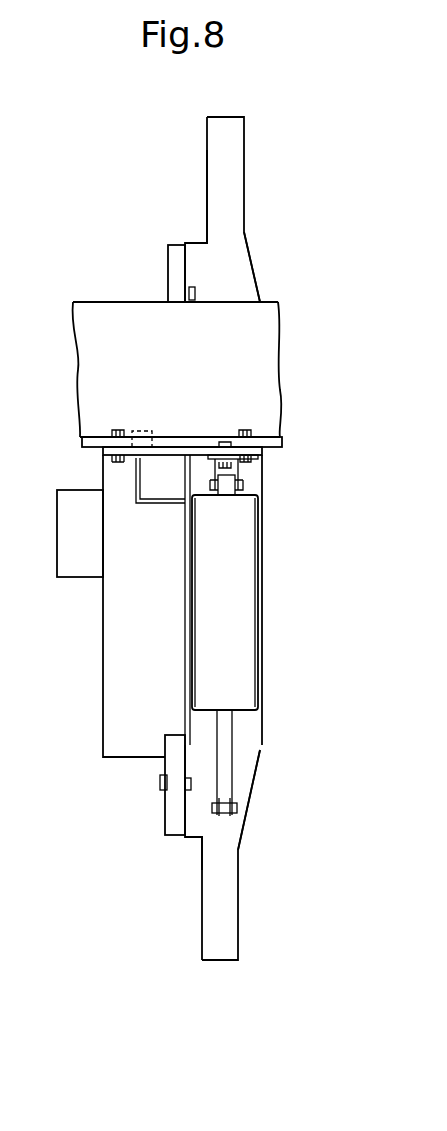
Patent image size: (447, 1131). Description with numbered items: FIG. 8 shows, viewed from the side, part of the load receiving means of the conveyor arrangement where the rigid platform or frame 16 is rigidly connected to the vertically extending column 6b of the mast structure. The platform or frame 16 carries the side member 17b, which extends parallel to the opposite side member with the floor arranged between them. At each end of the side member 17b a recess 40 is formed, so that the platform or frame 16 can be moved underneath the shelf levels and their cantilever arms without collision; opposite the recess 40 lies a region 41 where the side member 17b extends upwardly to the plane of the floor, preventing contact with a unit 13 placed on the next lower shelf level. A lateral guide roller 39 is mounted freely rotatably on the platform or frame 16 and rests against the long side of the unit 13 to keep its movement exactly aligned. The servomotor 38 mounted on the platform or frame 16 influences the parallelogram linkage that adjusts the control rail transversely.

The column 6b is at (92, 347).
The unit 13 is at (133, 745).
The platform or frame 16 is at (100, 475).
The side member 17b is at (217, 201).
The servomotor 38 is at (225, 745).
The lateral guide roller 39 is at (172, 263).
The recess 40 is at (205, 161).
The region 41 is at (245, 181).